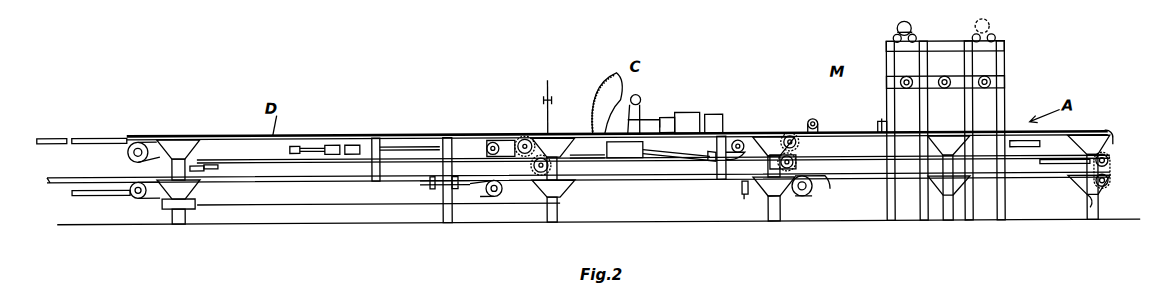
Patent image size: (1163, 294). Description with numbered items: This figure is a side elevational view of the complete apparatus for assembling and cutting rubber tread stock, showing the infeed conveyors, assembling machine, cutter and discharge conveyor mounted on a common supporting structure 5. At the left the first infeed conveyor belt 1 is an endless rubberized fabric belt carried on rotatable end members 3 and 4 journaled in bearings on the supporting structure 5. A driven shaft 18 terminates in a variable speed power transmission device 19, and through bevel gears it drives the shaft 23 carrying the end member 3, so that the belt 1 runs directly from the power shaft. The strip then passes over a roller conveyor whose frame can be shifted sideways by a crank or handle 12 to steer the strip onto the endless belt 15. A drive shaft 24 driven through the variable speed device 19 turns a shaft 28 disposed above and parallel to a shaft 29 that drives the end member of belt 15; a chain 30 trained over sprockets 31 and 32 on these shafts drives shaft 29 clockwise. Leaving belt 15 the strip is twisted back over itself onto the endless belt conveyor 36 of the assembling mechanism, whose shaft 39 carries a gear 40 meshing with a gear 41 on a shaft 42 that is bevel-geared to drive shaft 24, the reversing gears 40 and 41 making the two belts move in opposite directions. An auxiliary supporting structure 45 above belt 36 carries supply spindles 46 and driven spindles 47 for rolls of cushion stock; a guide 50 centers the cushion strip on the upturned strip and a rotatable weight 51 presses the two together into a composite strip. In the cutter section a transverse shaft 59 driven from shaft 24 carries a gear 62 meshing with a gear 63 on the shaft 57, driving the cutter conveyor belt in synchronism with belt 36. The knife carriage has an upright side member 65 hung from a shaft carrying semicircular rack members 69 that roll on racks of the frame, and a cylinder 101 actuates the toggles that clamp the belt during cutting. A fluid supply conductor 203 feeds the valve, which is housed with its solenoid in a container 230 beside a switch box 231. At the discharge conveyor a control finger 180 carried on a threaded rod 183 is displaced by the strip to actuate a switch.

The infeed conveyor belt 1 is at (322, 205).
The rotatable supporting end member 3 is at (160, 210).
The rotatable supporting end member 4 is at (498, 196).
The supporting structure 5 is at (452, 215).
The crank or handle 12 is at (745, 196).
The endless belt 15 is at (848, 202).
The driven shaft 18 is at (97, 194).
The variable speed power transmission device 19 is at (200, 137).
The shaft 23 is at (136, 198).
The drive shaft 24 is at (218, 165).
The shaft 28 is at (1110, 163).
The shaft 29 is at (1110, 190).
The chain 30 is at (1110, 183).
The sprocket 31 is at (1109, 158).
The sprocket 32 is at (1098, 212).
The endless belt conveyor 36 is at (984, 178).
The shaft 39 is at (790, 134).
The gear 40 is at (796, 152).
The gear 41 is at (815, 177).
The shaft 42 is at (782, 160).
The auxiliary supporting structure 45 is at (1005, 102).
The supply or storage spindles 46 is at (896, 38).
The driven spindles 47 is at (900, 84).
The guide 50 is at (879, 122).
The rotatable weight 51 is at (813, 120).
The shaft 57 is at (518, 140).
The transverse shaft 59 is at (543, 170).
The gear 62 is at (545, 182).
The gear 63 is at (526, 136).
The side member 65 is at (628, 160).
The drive or semicircular rack member 69 is at (612, 78).
The cylinder 101 is at (690, 162).
The control element or finger 180 is at (330, 132).
The threaded rod 183 is at (422, 145).
The fluid supply conductor 203 is at (560, 82).
The housing or container 230 is at (688, 113).
The box or container 231 is at (718, 115).